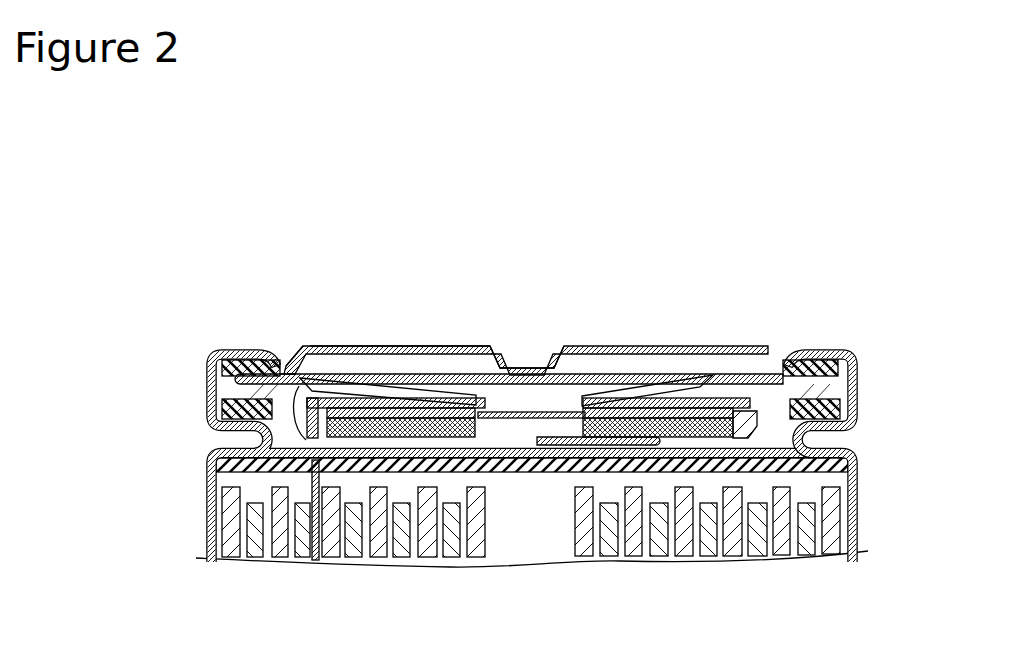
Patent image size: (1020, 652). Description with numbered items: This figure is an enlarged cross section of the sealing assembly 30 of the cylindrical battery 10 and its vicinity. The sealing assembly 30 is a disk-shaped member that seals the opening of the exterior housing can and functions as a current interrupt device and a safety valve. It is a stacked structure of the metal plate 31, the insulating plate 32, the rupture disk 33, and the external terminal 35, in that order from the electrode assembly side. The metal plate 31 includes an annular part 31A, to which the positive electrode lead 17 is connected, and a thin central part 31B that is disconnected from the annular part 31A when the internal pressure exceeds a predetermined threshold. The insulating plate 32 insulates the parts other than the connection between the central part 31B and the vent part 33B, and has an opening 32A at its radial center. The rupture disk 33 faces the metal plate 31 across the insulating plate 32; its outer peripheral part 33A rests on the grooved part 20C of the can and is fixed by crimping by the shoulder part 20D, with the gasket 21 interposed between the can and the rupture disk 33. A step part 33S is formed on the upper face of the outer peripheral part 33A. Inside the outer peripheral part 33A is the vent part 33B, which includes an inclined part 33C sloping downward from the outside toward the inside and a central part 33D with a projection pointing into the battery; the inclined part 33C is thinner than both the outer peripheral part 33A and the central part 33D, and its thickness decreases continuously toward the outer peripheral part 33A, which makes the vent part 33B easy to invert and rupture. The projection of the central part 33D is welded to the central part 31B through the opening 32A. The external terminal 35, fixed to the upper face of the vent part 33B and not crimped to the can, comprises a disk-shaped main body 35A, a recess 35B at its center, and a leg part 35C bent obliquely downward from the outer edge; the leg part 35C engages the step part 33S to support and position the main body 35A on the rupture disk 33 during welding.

The cylindrical battery 10 is at (745, 214).
The positive electrode lead 17 is at (558, 445).
The grooved part 20C is at (780, 452).
The shoulder part 20D is at (822, 350).
The gasket 21 is at (856, 386).
The sealing assembly 30 is at (763, 298).
The metal plate 31 is at (690, 472).
The annular part 31A is at (380, 472).
The central part 31B is at (512, 418).
The insulating plate 32 is at (212, 450).
The opening 32A is at (476, 430).
The rupture disk 33 is at (327, 352).
The outer peripheral part 33A is at (262, 440).
The vent part 33B is at (478, 392).
The inclined part 33C is at (690, 400).
The central part 33D is at (600, 385).
The step part 33S is at (283, 347).
The external terminal 35 is at (712, 346).
The main body 35A is at (397, 348).
The recess 35B is at (526, 368).
The leg part 35C is at (295, 350).